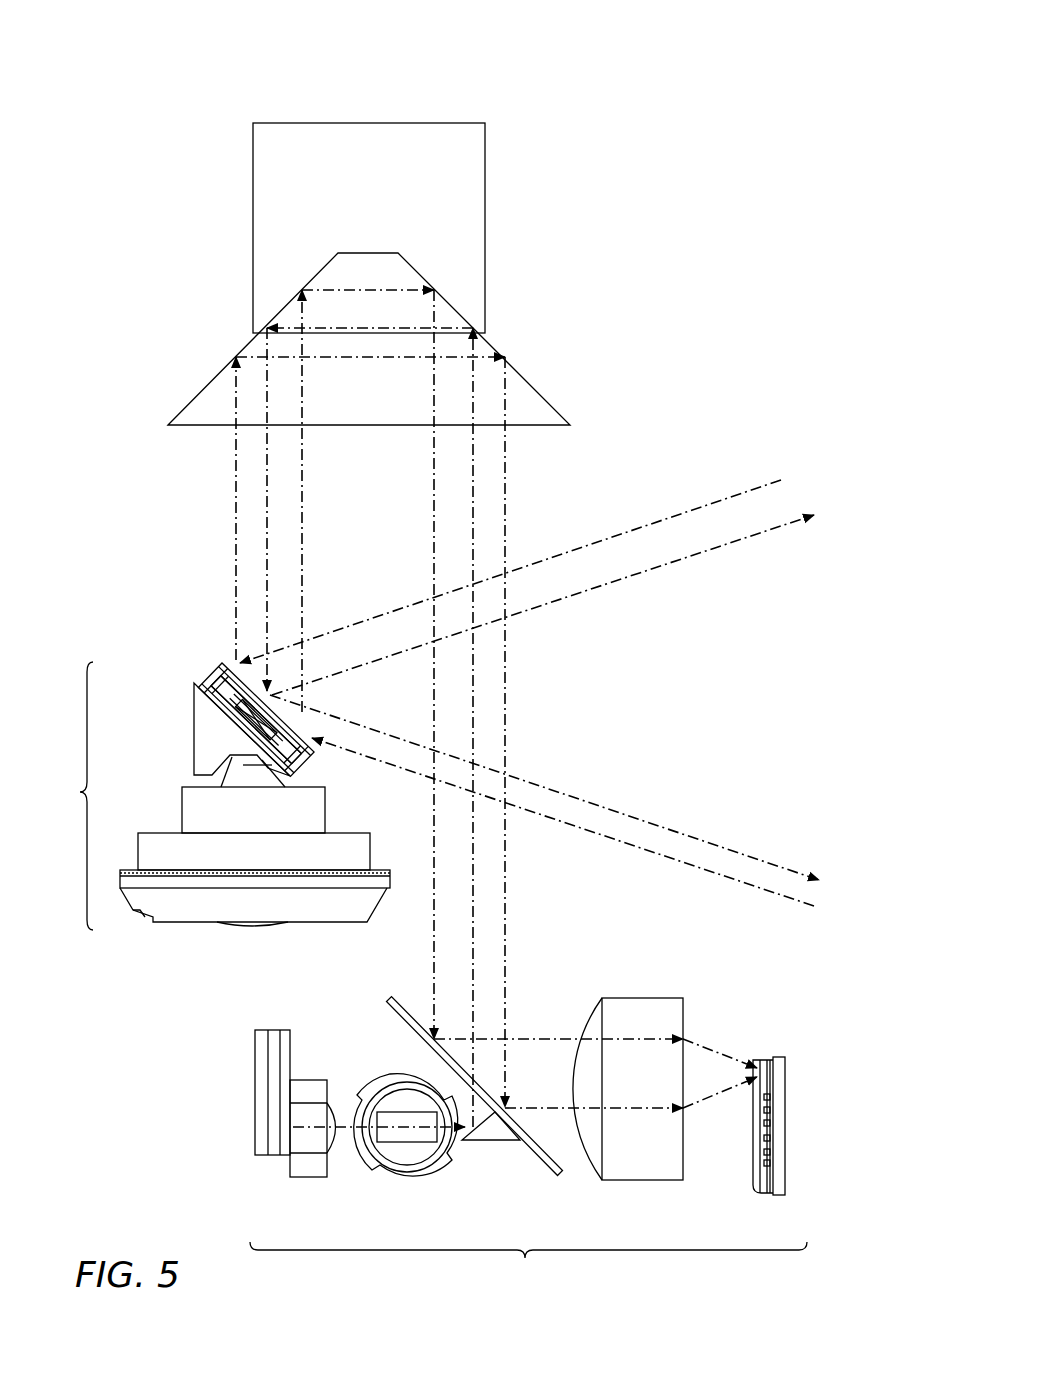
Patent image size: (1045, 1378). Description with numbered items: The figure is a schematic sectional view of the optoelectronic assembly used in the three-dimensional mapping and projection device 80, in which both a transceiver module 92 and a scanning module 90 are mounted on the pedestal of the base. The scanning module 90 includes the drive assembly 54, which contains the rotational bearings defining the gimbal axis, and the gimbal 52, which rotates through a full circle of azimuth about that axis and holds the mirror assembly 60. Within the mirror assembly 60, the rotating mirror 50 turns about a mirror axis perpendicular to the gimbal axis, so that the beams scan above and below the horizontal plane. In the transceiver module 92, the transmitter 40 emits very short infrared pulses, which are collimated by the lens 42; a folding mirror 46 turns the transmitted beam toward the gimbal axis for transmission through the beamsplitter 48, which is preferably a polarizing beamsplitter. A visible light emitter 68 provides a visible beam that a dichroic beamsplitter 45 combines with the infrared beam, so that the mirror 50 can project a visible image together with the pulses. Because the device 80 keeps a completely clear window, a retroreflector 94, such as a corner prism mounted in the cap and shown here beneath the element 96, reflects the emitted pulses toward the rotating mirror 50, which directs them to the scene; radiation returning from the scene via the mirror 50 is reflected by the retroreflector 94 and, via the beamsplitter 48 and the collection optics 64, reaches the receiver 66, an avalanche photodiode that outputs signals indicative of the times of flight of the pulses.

The 3D mapping and projection device 80 is at (723, 67).
The light guide 96 is at (486, 150).
The retroreflector 94 is at (563, 400).
The scanning module 90 is at (69, 796).
The mirror assembly 60 is at (197, 686).
The gimbal 52 is at (196, 735).
The drive assembly 54 is at (134, 912).
The rotating mirror 50 is at (269, 689).
The beamsplitter 48 is at (387, 1000).
The folding mirror 46 is at (499, 1142).
The transmitter 40 is at (255, 1120).
The lens 42 is at (312, 1079).
The visible light emitter 68 is at (380, 1076).
The beamsplitter 45 is at (389, 1142).
The collection optics 64 is at (646, 998).
The receiver 66 is at (762, 1057).
The transceiver module 92 is at (528, 1265).